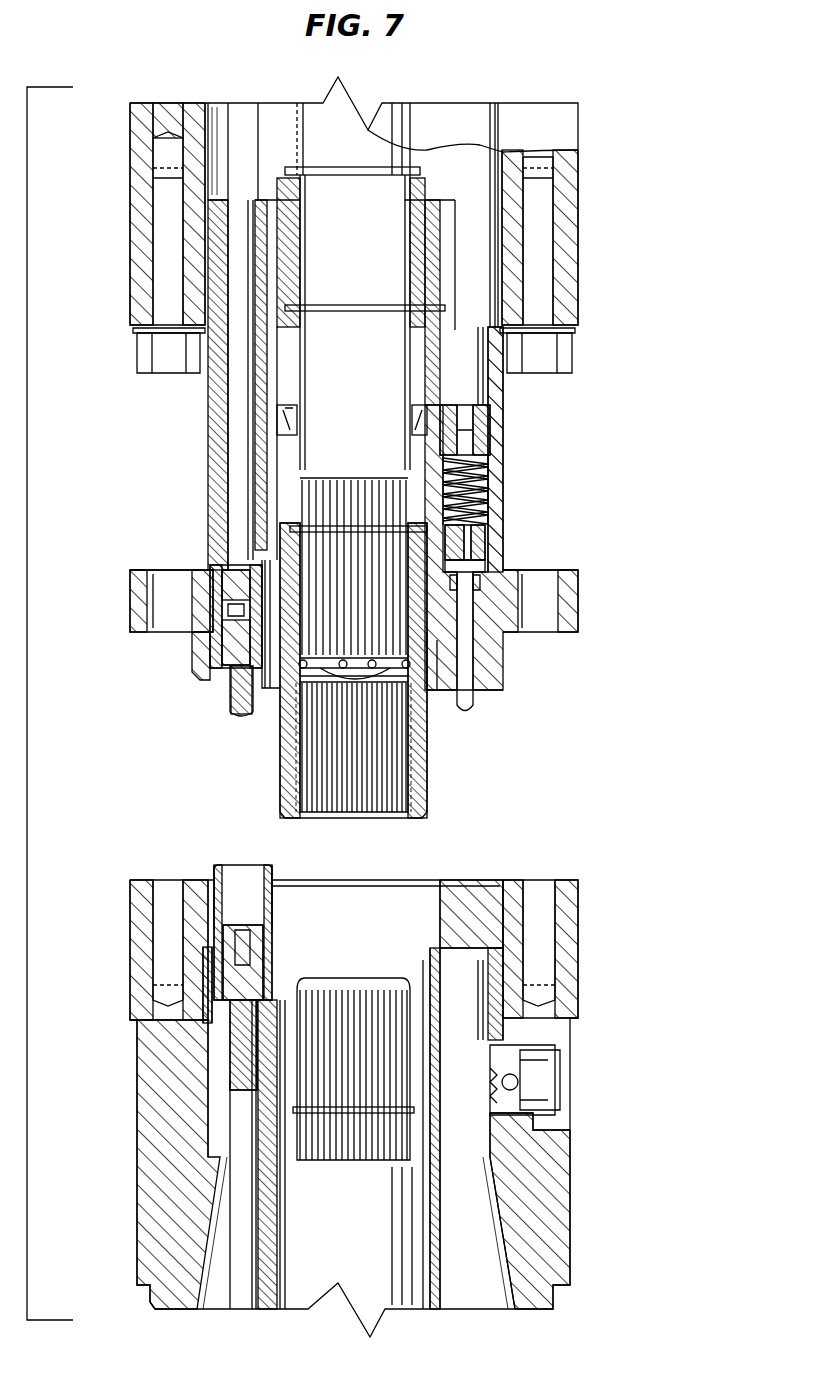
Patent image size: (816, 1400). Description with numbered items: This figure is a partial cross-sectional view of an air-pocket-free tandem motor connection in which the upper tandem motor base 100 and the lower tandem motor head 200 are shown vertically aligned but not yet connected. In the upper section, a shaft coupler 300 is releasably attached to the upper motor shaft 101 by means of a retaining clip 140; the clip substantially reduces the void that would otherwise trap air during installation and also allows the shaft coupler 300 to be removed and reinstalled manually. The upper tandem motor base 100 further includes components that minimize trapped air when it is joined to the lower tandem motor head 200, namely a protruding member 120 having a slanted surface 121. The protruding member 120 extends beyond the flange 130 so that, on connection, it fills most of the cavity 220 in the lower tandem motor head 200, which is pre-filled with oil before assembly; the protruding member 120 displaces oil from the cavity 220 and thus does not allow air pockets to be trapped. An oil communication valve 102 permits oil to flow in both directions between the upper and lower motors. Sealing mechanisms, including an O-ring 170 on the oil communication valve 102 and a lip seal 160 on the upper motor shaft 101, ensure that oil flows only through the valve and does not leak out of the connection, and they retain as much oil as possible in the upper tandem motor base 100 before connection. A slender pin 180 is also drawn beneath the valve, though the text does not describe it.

The upper tandem motor base 100 is at (612, 242).
The upper motor shaft 101 is at (382, 458).
The oil communication valve 102 is at (480, 543).
The protruding member 120 is at (478, 683).
The slanted surface 121 is at (228, 678).
The flange 130 is at (578, 598).
The retaining clip 140 is at (358, 668).
The lip seal 160 is at (278, 420).
The O-ring 170 is at (497, 552).
The contact pin 180 is at (472, 698).
The lower tandem motor head 200 is at (612, 1127).
The cavity 220 is at (387, 957).
The shaft coupler 300 is at (286, 756).